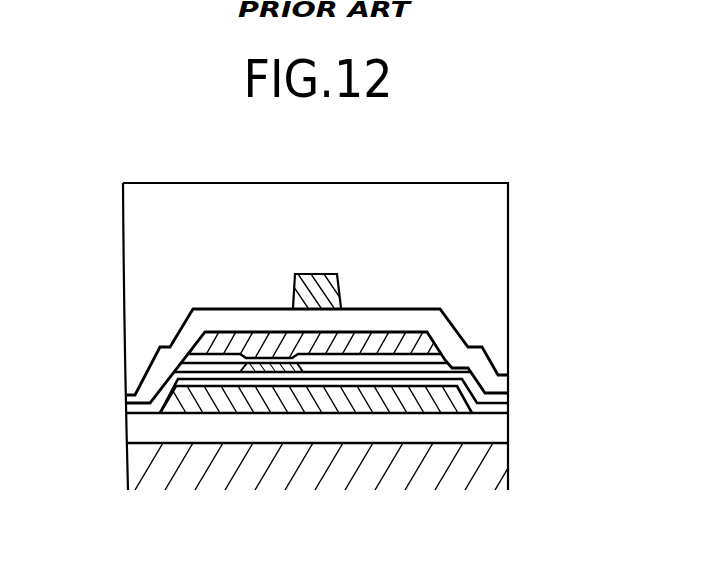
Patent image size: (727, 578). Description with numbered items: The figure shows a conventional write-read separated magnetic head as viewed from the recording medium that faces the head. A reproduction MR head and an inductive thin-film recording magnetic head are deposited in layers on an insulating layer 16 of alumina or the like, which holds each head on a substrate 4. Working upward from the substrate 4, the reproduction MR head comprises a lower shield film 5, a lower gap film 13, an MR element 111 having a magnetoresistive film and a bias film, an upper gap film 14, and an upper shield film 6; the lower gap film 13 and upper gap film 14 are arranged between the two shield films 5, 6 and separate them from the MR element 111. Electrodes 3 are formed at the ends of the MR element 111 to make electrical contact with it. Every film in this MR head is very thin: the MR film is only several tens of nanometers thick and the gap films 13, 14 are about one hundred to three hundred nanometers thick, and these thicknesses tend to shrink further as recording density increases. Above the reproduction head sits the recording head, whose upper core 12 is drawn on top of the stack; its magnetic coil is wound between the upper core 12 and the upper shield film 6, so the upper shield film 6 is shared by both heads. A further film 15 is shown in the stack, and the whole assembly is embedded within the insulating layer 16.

The electrode 3 is at (215, 372).
The substrate 4 is at (497, 462).
The lower shield film 5 is at (183, 402).
The upper shield film 6 is at (205, 352).
The upper core 12 is at (343, 281).
The lower gap film 13 is at (508, 408).
The upper gap film 14 is at (508, 400).
The passivation film 15 is at (508, 385).
The insulating layer 16 is at (473, 205).
The MR element 111 is at (310, 372).